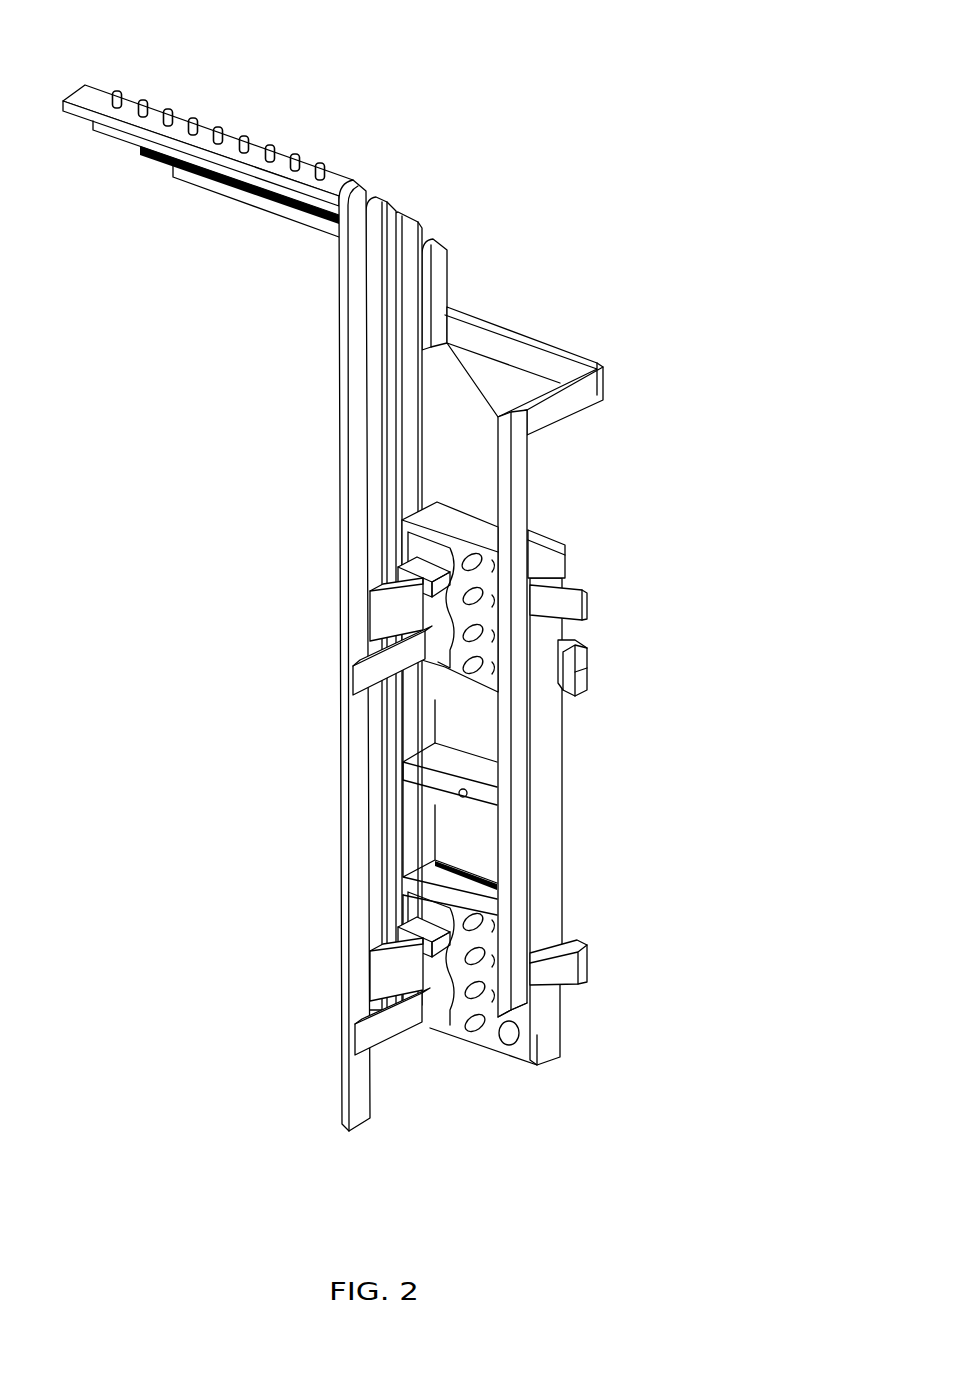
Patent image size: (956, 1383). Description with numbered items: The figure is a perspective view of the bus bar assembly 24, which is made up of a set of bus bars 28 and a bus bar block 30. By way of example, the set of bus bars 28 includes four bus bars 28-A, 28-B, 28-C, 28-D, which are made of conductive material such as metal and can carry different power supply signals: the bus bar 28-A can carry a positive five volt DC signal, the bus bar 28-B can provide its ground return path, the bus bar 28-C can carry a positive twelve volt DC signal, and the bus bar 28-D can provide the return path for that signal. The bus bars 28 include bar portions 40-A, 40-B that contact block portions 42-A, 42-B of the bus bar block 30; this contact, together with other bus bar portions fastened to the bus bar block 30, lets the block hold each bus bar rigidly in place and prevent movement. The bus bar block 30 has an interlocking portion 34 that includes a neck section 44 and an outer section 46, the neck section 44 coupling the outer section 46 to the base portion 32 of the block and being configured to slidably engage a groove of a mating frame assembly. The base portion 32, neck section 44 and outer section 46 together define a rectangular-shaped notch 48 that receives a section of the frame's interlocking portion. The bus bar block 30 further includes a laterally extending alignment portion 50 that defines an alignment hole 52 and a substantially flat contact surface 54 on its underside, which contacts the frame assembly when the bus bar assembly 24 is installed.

The bus bar assembly 24 is at (667, 77).
The set of bus bars 28 is at (430, 181).
The bus bar 28-A is at (360, 290).
The bus bar 28-B is at (373, 365).
The bus bar 28-C is at (405, 428).
The bus bar 28-D is at (447, 292).
The bus bar block 30 is at (558, 905).
The base portion 32 is at (553, 573).
The interlocking portion 34 is at (632, 650).
The bar portion 40-A is at (375, 672).
The bar portion 40-B is at (388, 1025).
The block portion 42-A is at (397, 621).
The block portion 42-B is at (427, 1036).
The neck section 44 is at (580, 641).
The outer section 46 is at (587, 681).
The rectangular-shaped notch 48 is at (557, 699).
The alignment portion 50 is at (452, 768).
The alignment hole 52 is at (467, 792).
The contact surface 54 is at (458, 822).